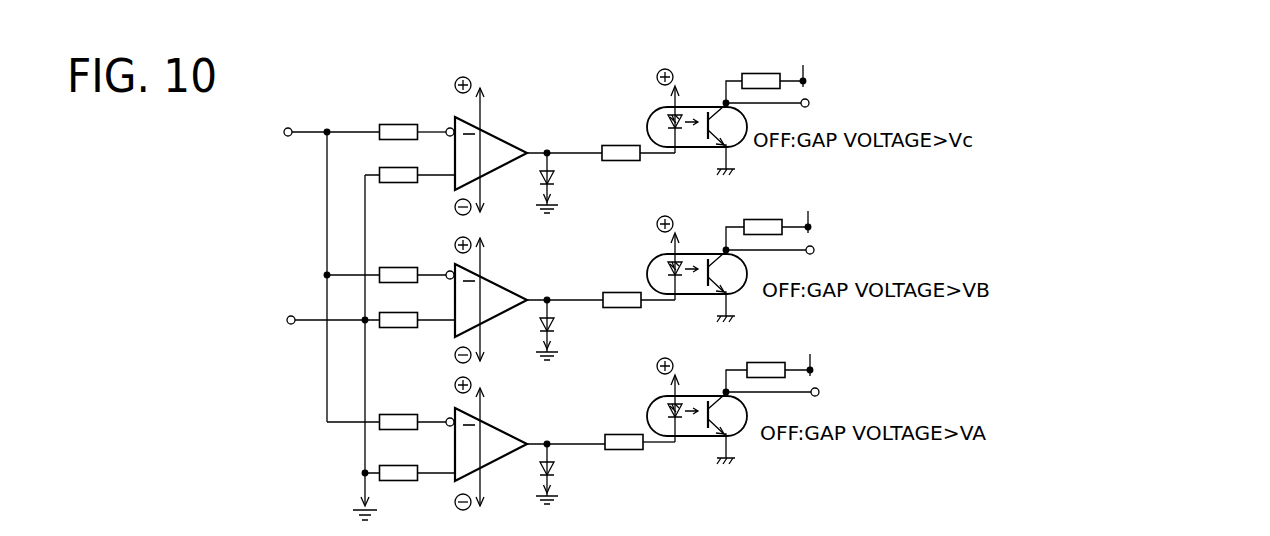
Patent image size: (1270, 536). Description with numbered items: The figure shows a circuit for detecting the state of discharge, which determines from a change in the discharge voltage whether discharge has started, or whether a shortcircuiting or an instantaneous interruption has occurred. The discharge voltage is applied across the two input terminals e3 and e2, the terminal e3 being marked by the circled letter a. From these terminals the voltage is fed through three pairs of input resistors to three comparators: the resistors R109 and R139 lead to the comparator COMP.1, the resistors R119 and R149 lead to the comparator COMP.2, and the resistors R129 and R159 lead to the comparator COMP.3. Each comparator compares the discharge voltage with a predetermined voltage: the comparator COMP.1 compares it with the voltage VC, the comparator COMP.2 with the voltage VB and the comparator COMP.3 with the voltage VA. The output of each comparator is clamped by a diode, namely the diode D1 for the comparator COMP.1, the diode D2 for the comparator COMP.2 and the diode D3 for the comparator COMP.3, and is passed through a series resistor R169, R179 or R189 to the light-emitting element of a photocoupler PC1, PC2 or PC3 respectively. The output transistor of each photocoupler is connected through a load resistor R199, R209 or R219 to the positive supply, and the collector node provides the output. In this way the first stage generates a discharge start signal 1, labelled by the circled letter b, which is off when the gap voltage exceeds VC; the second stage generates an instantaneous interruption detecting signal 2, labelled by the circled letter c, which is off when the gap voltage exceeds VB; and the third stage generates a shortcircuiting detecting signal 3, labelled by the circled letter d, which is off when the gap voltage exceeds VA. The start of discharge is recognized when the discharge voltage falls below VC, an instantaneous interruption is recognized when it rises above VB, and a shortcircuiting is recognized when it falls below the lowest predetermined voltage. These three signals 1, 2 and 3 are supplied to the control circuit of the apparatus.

The input terminal a (gap voltage e3) a is at (302, 126).
The discharge start signal output b is at (832, 92).
The instantaneous interruption detection signal output c is at (830, 235).
The shortcircuit detection signal output d is at (838, 376).
The discharge start signal 1 is at (782, 103).
The instantaneous interruption detecting signal 2 is at (784, 250).
The shortcircuiting detecting signal 3 is at (788, 392).
The terminal e3 is at (290, 146).
The terminal e2 is at (292, 306).
The resistor R109 is at (417, 122).
The resistor R139 is at (410, 165).
The resistor R119 is at (390, 264).
The resistor R149 is at (375, 310).
The resistor R129 is at (390, 412).
The resistor R159 is at (410, 462).
The resistor R169 is at (638, 143).
The resistor R179 is at (639, 290).
The resistor R189 is at (640, 432).
The resistor R199 is at (766, 76).
The resistor R209 is at (768, 223).
The resistor R219 is at (769, 365).
The comparator COMP.1 is at (504, 146).
The comparator COMP.2 is at (504, 300).
The comparator COMP.3 is at (506, 443).
The diode D1 is at (564, 181).
The diode D2 is at (565, 328).
The diode D3 is at (566, 472).
The photocoupler PC1 is at (697, 125).
The photocoupler PC2 is at (697, 272).
The photocoupler PC3 is at (697, 416).